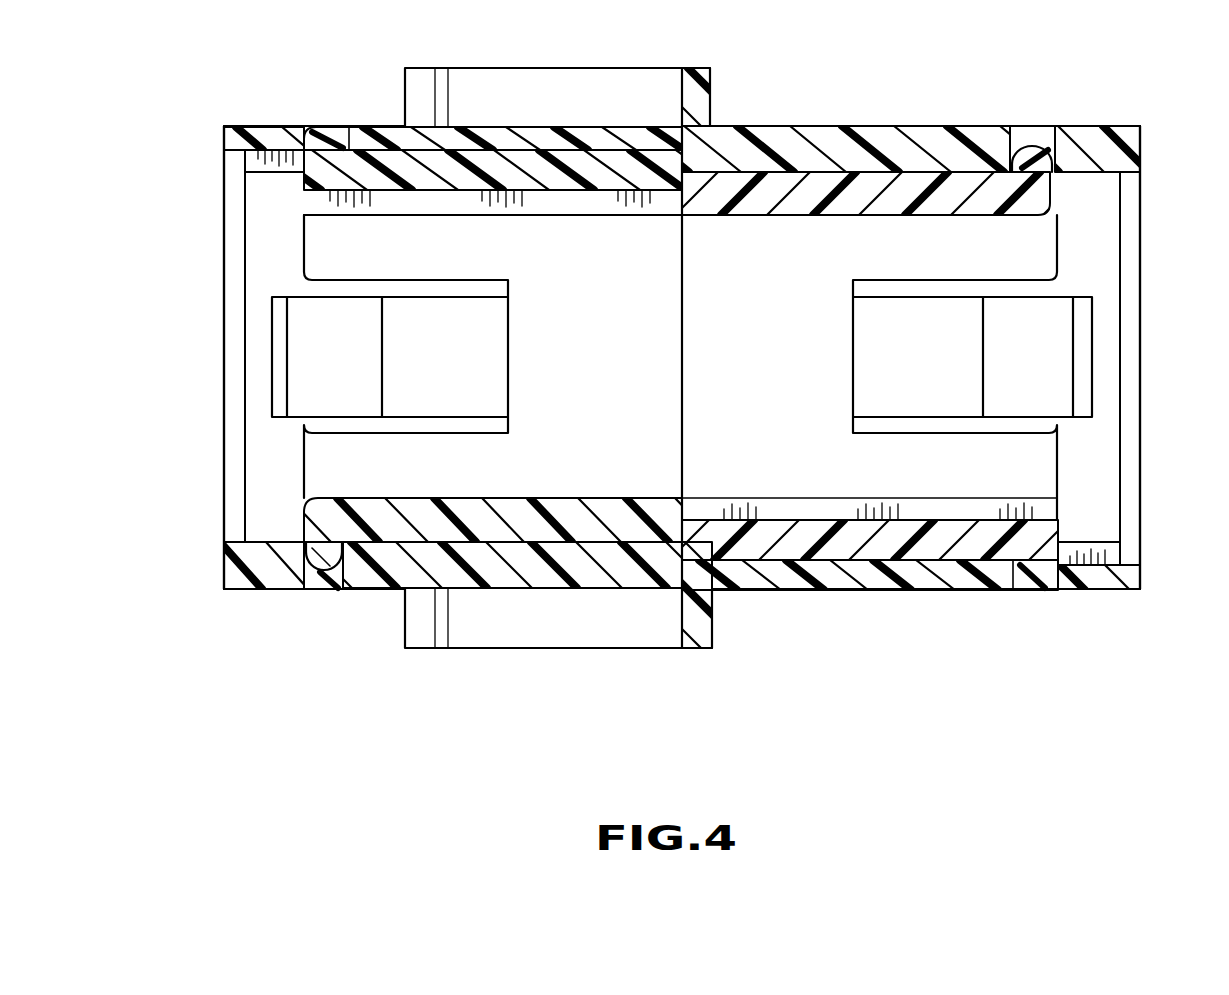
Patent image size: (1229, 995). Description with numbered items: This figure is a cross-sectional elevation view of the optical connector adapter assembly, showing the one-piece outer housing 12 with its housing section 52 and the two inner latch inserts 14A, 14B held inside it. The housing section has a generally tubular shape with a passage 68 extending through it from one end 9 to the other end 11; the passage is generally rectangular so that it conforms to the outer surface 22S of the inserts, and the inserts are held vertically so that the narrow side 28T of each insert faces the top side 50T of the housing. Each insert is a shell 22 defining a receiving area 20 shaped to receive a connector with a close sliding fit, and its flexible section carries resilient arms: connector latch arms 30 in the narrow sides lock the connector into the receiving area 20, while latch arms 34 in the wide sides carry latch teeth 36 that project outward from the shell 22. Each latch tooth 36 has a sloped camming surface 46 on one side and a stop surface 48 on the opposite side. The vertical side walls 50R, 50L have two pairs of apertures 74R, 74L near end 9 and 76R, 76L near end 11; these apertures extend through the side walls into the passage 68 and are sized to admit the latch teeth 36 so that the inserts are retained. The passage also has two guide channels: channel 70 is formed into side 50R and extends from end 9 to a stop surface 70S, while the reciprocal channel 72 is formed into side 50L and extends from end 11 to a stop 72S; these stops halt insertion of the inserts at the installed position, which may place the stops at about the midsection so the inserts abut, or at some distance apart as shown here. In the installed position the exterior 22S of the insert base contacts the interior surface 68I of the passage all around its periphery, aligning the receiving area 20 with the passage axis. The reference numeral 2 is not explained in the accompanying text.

The connector assembly 2 is at (455, 160).
The end 9 is at (223, 139).
The end 11 is at (1141, 236).
The outer housing 12 is at (926, 590).
The latch insert 14A is at (400, 168).
The latch insert 14B is at (905, 190).
The receiving area 20 is at (305, 246).
The shell 22 is at (548, 515).
The outer surface 22S is at (615, 535).
The narrow side 28T is at (598, 382).
The connector latch arm 30 is at (295, 365).
The latch arm 34 is at (600, 165).
The latch tooth 36 is at (312, 146).
The camming surface 46 is at (345, 592).
The stop surface 48 is at (308, 540).
The side of the housing 50R is at (268, 126).
The top side of the housing 50T is at (265, 318).
The side of the housing 50L is at (1100, 592).
The housing section 52 is at (522, 72).
The passage 68 is at (1105, 190).
The interior surface of the passage 68I is at (810, 170).
The guide channel 70 is at (278, 158).
The stop surface 70S is at (700, 148).
The guide channel 72 is at (1110, 548).
The stop surface 72S is at (684, 566).
The aperture 74R is at (345, 149).
The aperture 74L is at (318, 594).
The aperture 76R is at (1035, 128).
The aperture 76L is at (1030, 591).